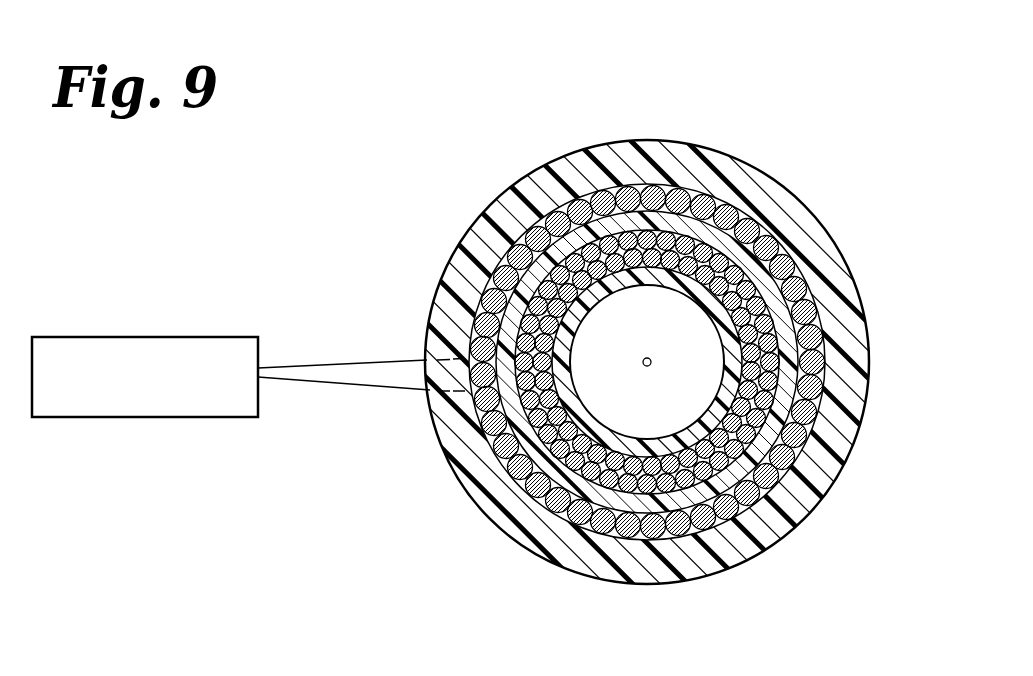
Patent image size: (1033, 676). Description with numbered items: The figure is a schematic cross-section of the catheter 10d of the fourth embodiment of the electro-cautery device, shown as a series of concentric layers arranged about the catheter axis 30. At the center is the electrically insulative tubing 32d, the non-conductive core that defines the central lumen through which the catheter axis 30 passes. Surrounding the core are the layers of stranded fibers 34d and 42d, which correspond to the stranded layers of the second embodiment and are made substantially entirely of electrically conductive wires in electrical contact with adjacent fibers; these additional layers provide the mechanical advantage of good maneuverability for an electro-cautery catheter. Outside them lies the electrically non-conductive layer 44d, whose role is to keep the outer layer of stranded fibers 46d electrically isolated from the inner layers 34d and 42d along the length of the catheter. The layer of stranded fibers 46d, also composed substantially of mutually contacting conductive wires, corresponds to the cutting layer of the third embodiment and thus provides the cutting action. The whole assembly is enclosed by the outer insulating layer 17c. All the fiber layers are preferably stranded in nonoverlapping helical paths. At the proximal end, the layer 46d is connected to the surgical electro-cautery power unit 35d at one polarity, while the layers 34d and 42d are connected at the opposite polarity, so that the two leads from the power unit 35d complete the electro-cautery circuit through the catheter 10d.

The catheter 10d is at (446, 227).
The outer insulating layer 17c is at (676, 149).
The catheter axis 30 is at (646, 358).
The electrically insulative tubing 32d is at (636, 437).
The layer of stranded fibers 34d is at (748, 348).
The surgical electro-cautery power unit 35d is at (111, 337).
The layer of stranded fibers 42d is at (752, 397).
The electrically non-conductive layer 44d is at (783, 307).
The layer of stranded fibers 46d is at (773, 243).